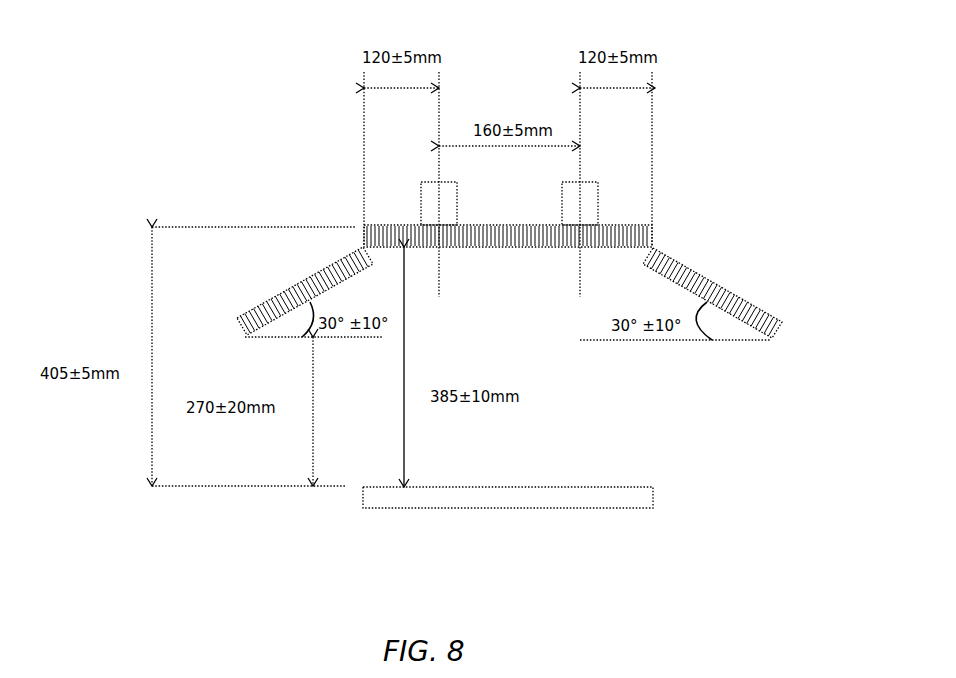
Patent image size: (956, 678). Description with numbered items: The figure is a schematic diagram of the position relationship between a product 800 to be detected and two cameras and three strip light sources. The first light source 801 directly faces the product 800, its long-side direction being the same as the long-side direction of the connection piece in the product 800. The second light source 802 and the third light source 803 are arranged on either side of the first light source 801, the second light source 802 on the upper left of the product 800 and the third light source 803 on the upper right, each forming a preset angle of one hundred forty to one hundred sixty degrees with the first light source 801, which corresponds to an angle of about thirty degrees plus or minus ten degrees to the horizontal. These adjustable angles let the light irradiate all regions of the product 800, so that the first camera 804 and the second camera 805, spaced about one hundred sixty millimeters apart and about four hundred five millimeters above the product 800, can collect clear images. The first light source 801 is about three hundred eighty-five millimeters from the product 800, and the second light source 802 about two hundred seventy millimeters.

The product to be detected 800 is at (510, 508).
The first light source 801 is at (364, 225).
The second light source 802 is at (297, 280).
The third light source 803 is at (718, 280).
The first camera 804 is at (445, 182).
The second camera 805 is at (597, 182).